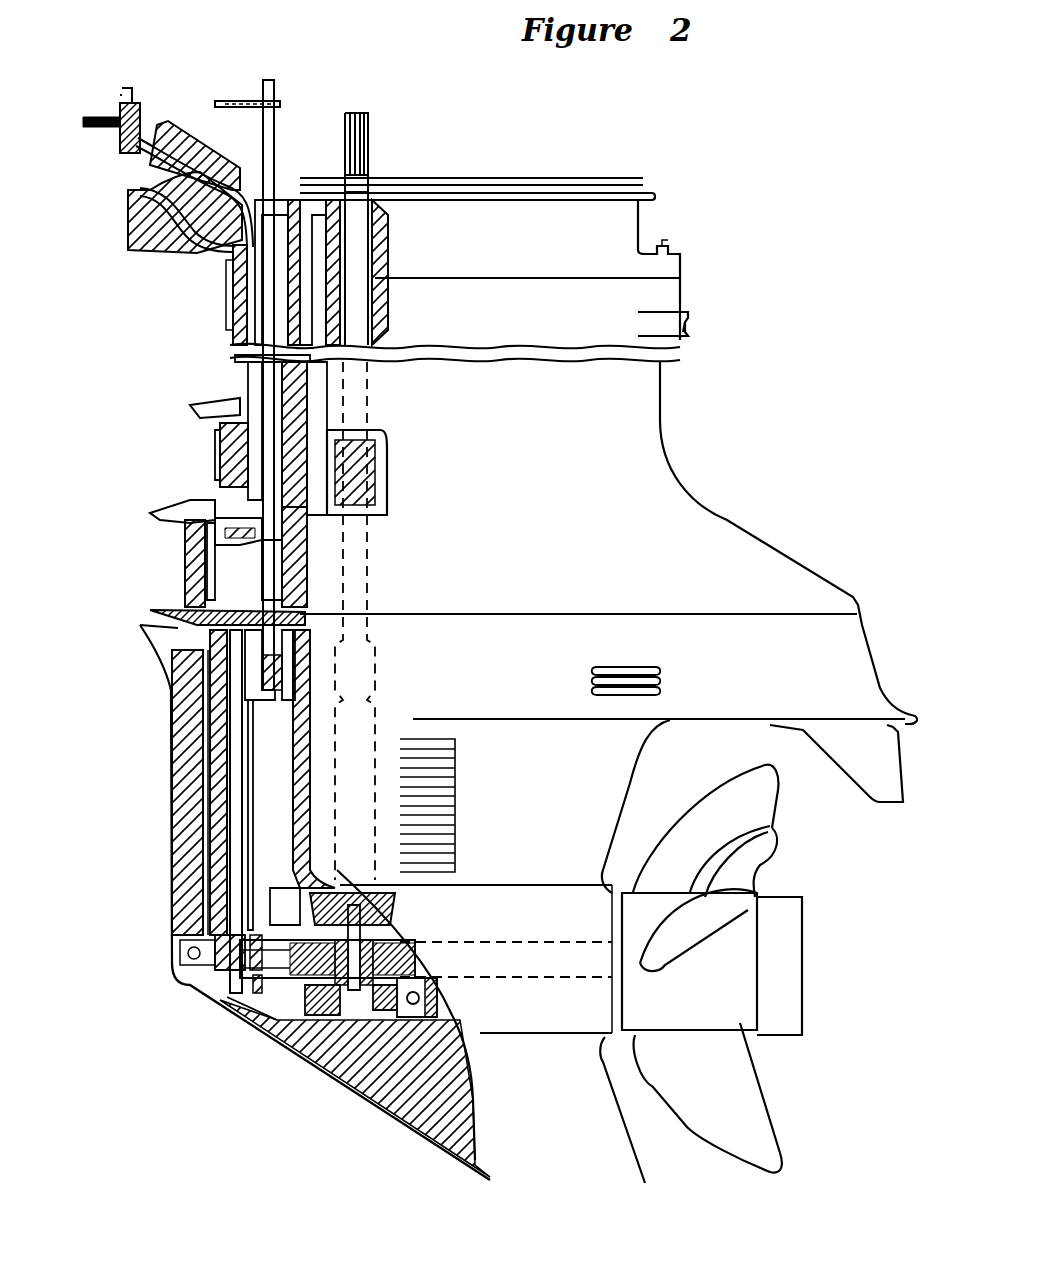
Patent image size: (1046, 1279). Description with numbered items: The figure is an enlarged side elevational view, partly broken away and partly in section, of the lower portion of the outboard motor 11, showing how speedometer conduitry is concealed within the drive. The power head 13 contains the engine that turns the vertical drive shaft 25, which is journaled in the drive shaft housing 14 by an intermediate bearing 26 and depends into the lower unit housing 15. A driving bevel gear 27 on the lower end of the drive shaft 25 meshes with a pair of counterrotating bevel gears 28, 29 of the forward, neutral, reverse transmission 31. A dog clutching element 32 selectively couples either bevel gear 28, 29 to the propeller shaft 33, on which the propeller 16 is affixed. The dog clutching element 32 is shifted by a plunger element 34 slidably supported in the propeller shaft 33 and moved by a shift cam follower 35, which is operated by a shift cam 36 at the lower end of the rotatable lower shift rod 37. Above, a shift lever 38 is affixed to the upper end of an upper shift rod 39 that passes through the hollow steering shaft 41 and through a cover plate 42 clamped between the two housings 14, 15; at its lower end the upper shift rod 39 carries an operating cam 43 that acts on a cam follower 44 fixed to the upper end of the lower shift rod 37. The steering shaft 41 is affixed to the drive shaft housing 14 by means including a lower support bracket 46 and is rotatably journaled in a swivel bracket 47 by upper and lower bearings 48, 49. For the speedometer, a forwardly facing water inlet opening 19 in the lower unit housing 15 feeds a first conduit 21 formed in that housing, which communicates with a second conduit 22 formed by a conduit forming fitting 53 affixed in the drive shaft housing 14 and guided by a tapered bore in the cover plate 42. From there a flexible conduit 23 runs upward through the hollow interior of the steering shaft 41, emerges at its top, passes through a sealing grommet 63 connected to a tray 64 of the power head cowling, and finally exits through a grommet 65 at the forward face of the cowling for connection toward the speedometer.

The outboard motor 11 is at (698, 261).
The power head 13 is at (113, 96).
The drive shaft housing 14 is at (700, 528).
The lower unit housing 15 is at (610, 782).
The propeller 16 is at (747, 1120).
The water inlet opening 19 is at (207, 875).
The first conduit 21 is at (207, 781).
The second conduit 22 is at (203, 590).
The flexible conduit 23 is at (257, 548).
The drive shaft 25 is at (368, 128).
The intermediate bearing 26 is at (365, 490).
The driving bevel gear 27 is at (287, 891).
The bevel gear 28 is at (340, 1015).
The bevel gear 29 is at (383, 997).
The transmission 31 is at (265, 1021).
The dog clutching element 32 is at (340, 1021).
The propeller shaft 33 is at (560, 977).
The plunger element 34 is at (390, 938).
The shift cam follower 35 is at (228, 988).
The shift cam 36 is at (222, 943).
The lower shift rod 37 is at (237, 886).
The shift lever 38 is at (247, 98).
The upper shift rod 39 is at (273, 138).
The steering shaft 41 is at (280, 370).
The cover plate 42 is at (293, 605).
The operating cam 43 is at (257, 668).
The cam follower 44 is at (257, 651).
The lower support bracket 46 is at (215, 456).
The swivel bracket 47 is at (140, 231).
The upper bearing 48 is at (240, 298).
The lower bearing 49 is at (240, 362).
The conduit forming fitting 53 is at (190, 551).
The sealing grommet 63 is at (212, 151).
The tray 64 is at (130, 148).
The grommet 65 is at (125, 134).